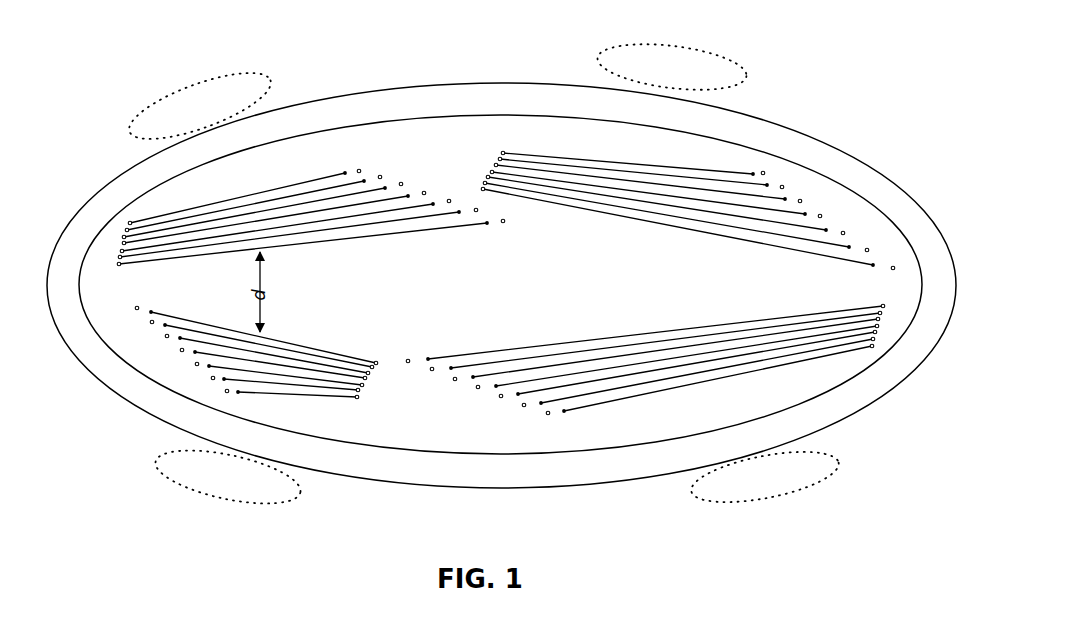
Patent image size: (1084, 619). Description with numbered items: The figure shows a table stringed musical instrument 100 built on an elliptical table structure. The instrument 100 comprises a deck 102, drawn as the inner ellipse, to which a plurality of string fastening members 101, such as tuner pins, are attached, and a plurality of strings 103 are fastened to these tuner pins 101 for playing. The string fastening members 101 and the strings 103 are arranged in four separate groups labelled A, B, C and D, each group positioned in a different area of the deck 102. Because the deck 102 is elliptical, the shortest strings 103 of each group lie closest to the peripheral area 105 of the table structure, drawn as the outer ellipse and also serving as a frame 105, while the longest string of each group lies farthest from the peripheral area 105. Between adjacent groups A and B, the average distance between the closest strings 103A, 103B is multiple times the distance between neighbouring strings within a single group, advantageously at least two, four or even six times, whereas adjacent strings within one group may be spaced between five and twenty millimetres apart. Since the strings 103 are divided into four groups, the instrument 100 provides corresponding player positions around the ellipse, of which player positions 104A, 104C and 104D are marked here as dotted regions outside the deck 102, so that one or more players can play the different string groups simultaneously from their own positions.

The table stringed musical instrument 100 is at (343, 62).
The string fastening members 101 is at (406, 181).
The deck 102 is at (427, 428).
The strings 103 is at (753, 174).
The closest string of group A 103A is at (352, 238).
The closest string of group B 103B is at (347, 353).
The player position 104A is at (200, 106).
The player position 104C is at (450, 275).
The player position 104D is at (764, 477).
The peripheral area 105 is at (629, 469).